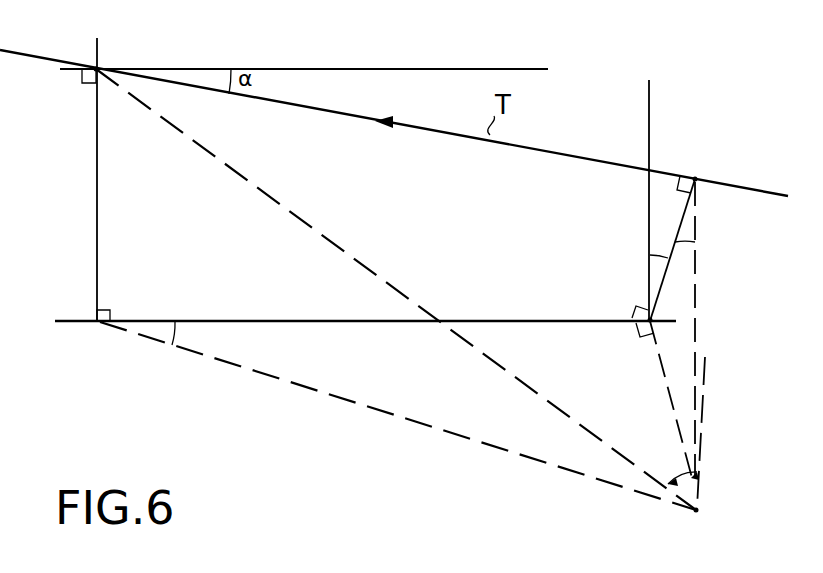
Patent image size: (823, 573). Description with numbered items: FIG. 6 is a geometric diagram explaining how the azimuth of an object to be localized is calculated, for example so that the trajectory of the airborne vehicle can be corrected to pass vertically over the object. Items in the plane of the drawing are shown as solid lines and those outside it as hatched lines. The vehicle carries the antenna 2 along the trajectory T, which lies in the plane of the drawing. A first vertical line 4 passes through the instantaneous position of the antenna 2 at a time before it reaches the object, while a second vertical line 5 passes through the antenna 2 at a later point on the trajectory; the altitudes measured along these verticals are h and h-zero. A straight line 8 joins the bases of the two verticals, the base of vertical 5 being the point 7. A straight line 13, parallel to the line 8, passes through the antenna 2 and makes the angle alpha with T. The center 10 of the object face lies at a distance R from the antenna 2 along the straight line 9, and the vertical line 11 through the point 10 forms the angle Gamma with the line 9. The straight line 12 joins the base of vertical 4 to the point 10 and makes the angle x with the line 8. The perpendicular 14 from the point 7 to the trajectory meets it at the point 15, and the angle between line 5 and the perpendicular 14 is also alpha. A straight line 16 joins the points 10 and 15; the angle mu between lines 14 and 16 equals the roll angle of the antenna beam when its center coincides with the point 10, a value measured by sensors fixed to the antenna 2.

The antenna 2 is at (100, 67).
The vertical line 4 is at (97, 207).
The vertical line 5 is at (649, 135).
The base of vertical 7 is at (636, 310).
The straight line 8 is at (296, 321).
The straight line 9 is at (372, 270).
The center of the face 10 is at (699, 512).
The vertical line 11 is at (707, 380).
The straight line 12 is at (275, 382).
The straight line 13 is at (347, 69).
The perpendicular 14 is at (677, 216).
The point 15 is at (698, 178).
The straight line 16 is at (698, 270).